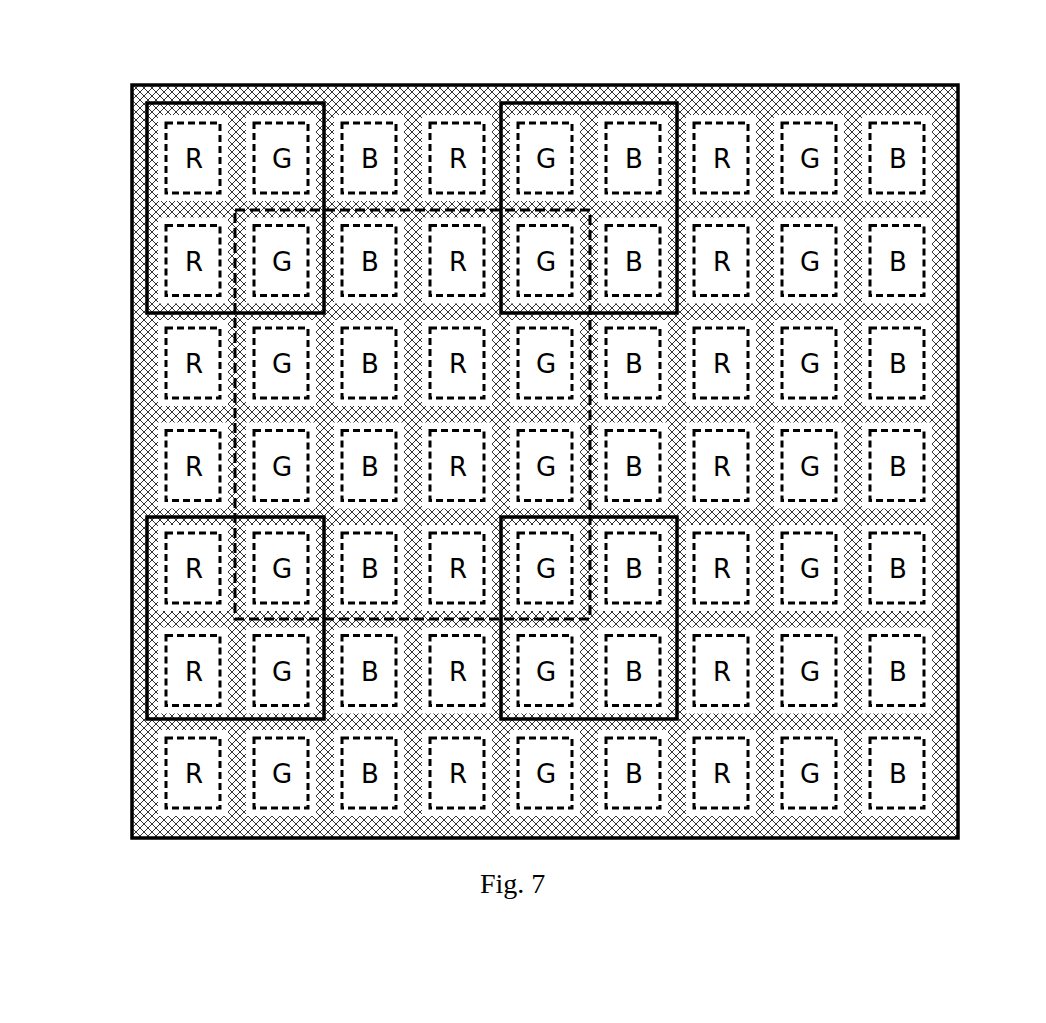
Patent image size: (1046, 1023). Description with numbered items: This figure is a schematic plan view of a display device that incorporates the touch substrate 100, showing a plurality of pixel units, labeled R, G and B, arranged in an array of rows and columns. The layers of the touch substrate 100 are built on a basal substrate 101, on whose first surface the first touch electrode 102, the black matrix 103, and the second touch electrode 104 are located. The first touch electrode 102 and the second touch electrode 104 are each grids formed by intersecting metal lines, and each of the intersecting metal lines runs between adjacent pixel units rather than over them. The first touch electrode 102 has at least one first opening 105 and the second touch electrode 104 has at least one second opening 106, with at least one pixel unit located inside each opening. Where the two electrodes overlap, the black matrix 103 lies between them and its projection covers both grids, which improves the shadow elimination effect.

The touch substrate 100 is at (92, 65).
The basal substrate 101 is at (132, 140).
The first touch electrode 102 is at (152, 252).
The black matrix 103 is at (140, 335).
The second touch electrode 104 is at (237, 420).
The first opening 105 is at (287, 103).
The second opening 106 is at (383, 222).